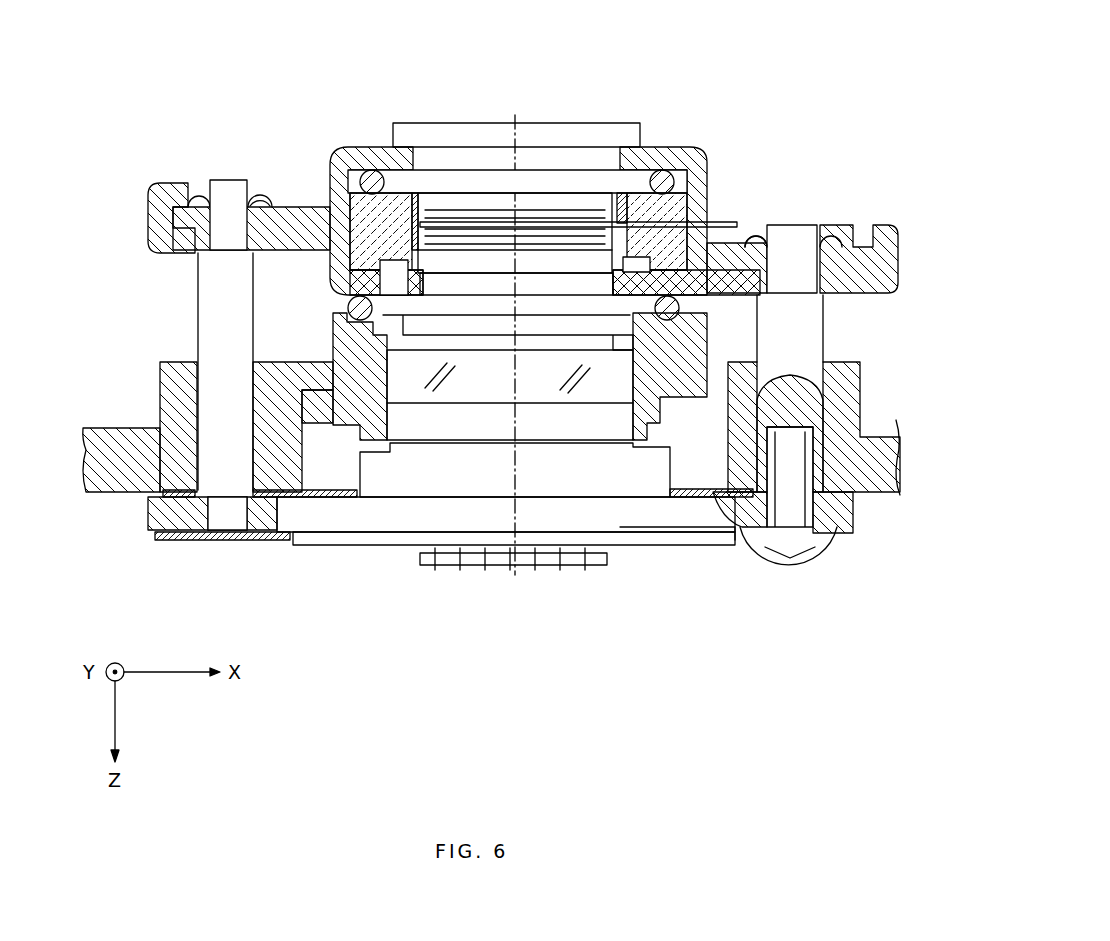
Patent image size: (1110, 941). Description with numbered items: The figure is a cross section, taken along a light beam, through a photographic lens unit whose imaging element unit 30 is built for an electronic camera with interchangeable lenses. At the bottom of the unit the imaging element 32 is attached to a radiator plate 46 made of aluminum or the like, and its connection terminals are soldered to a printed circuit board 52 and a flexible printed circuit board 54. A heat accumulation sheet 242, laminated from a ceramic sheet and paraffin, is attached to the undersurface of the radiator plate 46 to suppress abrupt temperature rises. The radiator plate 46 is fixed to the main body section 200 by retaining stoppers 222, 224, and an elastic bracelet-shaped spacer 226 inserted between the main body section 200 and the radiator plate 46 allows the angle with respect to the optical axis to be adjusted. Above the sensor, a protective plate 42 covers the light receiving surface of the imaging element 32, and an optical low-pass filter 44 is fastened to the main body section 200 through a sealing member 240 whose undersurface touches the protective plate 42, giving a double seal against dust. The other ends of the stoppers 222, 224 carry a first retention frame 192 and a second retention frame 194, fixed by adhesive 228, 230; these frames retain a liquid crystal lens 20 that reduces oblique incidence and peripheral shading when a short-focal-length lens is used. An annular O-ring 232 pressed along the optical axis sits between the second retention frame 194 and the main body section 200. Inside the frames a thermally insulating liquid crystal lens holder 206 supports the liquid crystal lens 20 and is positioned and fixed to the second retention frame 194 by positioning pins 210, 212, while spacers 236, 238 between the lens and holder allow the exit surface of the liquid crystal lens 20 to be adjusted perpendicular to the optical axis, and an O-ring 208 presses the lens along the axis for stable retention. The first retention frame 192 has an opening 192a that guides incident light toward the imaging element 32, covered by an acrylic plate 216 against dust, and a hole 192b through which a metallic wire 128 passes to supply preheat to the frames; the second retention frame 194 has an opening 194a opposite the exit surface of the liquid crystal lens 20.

The liquid crystal lens 20 is at (440, 190).
The imaging element unit 30 is at (435, 612).
The imaging element 32 is at (392, 490).
The protective plate 42 is at (366, 460).
The optical low-pass filter 44 is at (370, 352).
The radiator plate 46 is at (850, 528).
The printed circuit board 52 is at (710, 535).
The flexible printed circuit board 54 is at (600, 566).
The metallic wire 128 is at (712, 224).
The first retention frame A 192 is at (288, 216).
The opening 192a is at (470, 150).
The hole 192b is at (700, 160).
The second retention frame B 194 is at (893, 243).
The opening 194a is at (542, 256).
The main body section 200 is at (850, 381).
The liquid crystal lens holder 206 is at (352, 262).
The O-ring 208 is at (390, 265).
The positioning pin 210 is at (365, 176).
The positioning pin 212 is at (665, 170).
The acrylic plate 216 is at (628, 146).
The retaining stopper 222 is at (228, 186).
The retaining stopper 224 is at (798, 232).
The spacer 226 is at (317, 540).
The adhesive 228 is at (256, 200).
The adhesive 230 is at (760, 240).
The O-ring 232 is at (350, 310).
The spacer 236 is at (430, 172).
The spacer 238 is at (598, 203).
The sealing member 240 is at (350, 437).
The heat accumulation sheet 242 is at (172, 540).